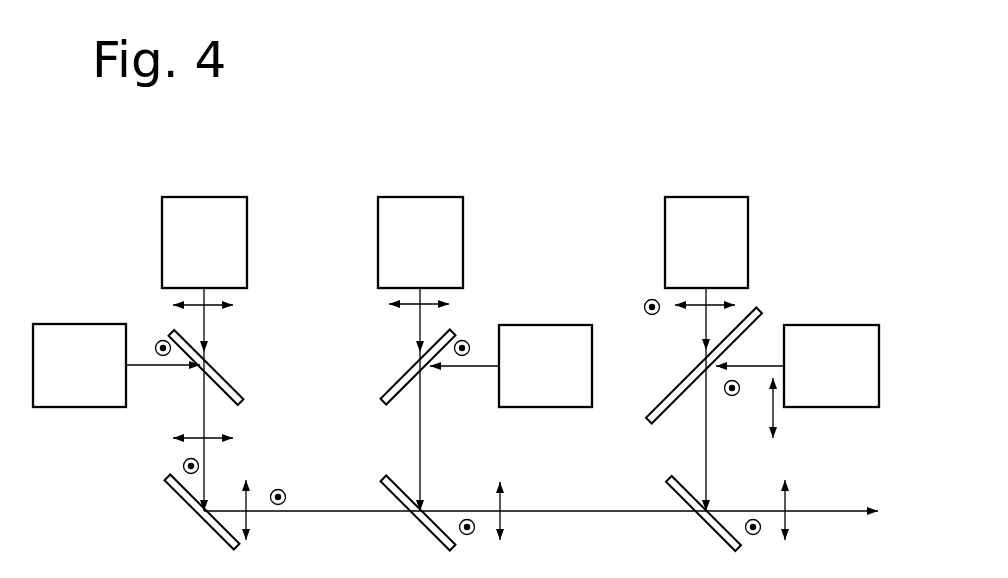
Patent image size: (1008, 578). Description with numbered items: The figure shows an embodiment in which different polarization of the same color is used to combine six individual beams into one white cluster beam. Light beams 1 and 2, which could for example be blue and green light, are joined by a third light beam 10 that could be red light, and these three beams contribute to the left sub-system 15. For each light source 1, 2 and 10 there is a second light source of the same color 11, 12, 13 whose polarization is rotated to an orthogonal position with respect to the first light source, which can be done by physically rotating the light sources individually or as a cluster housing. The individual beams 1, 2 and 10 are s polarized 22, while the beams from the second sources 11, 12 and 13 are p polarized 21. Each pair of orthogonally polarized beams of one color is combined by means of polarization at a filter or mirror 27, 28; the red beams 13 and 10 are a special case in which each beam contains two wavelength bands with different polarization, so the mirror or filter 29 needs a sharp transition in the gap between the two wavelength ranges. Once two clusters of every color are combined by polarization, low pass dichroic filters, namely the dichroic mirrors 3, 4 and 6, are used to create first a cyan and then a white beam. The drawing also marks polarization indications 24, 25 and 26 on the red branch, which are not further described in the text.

The light beam 1 is at (66, 342).
The light beam 2 is at (535, 347).
The dichroic mirror 3 is at (212, 530).
The dichroic mirror 4 is at (432, 535).
The dichroic mirror 6 is at (712, 530).
The third light beam 10 is at (850, 344).
The second light source 11 is at (218, 211).
The second light source 12 is at (446, 211).
The second light source 13 is at (735, 208).
The left sub-system 15 is at (585, 200).
The p polarization 21 is at (210, 306).
The s polarization 22 is at (172, 364).
The polarization direction of first red light 24 is at (700, 299).
The polarization direction of second red light 25 is at (729, 396).
The polarization direction of combined red light 26 is at (778, 417).
The filter or mirror 27 is at (233, 392).
The filter or mirror 28 is at (397, 388).
The mirror or filter 29 is at (650, 418).